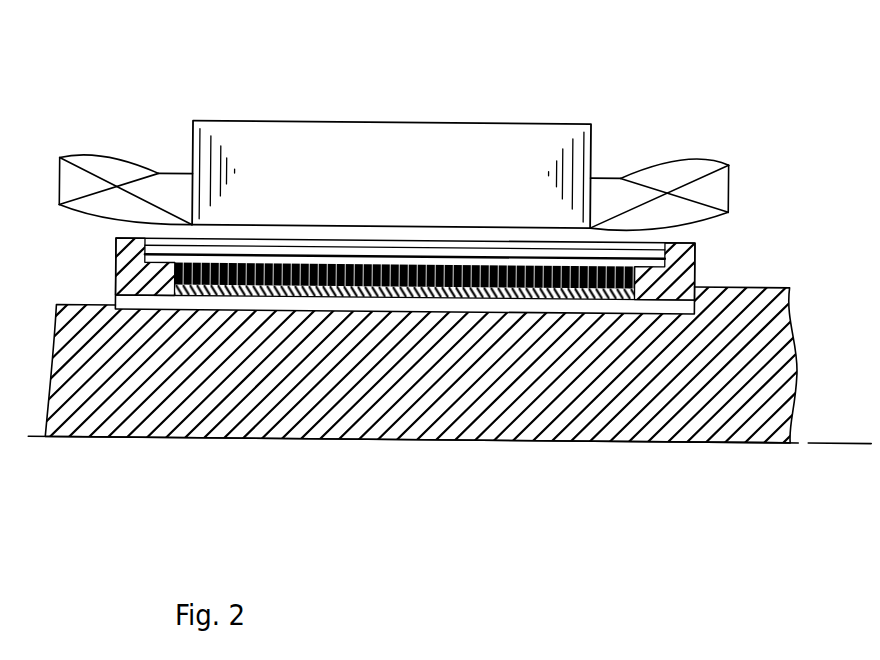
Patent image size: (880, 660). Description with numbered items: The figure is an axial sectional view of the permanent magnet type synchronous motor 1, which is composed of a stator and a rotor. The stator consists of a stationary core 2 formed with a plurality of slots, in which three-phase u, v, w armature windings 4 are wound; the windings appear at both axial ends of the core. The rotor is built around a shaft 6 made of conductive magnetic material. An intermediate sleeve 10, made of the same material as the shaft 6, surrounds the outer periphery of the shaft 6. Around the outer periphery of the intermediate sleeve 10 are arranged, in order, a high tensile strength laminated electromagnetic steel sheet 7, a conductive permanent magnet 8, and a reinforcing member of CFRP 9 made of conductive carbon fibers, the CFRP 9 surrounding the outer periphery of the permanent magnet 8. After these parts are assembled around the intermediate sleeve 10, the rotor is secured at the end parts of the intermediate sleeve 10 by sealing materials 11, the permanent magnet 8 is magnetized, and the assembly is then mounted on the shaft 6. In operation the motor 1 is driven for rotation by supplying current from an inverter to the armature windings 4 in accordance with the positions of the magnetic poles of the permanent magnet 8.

The permanent magnet type synchronous motor 1 is at (553, 120).
The stationary core 2 is at (428, 139).
The armature windings 4 is at (703, 160).
The shaft 6 is at (717, 390).
The high tensile strength laminated electromagnetic steel sheet 7 is at (567, 293).
The permanent magnet 8 is at (405, 261).
The CFRP reinforcing member 9 is at (378, 249).
The intermediate sleeve 10 is at (682, 263).
The sealing materials 11 is at (143, 268).